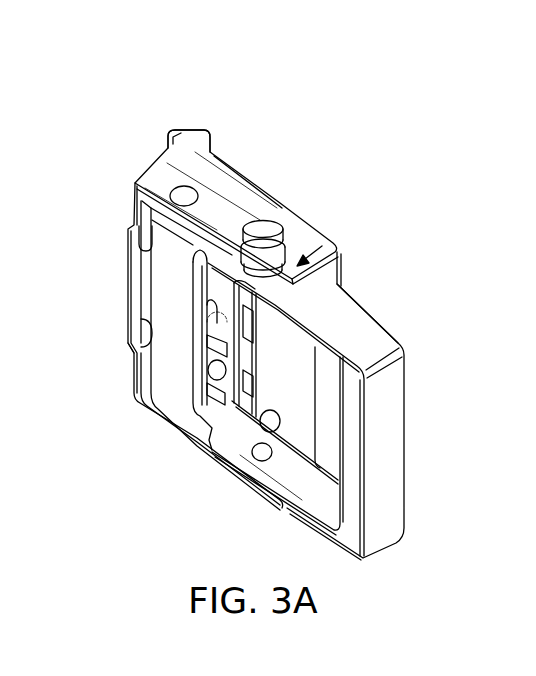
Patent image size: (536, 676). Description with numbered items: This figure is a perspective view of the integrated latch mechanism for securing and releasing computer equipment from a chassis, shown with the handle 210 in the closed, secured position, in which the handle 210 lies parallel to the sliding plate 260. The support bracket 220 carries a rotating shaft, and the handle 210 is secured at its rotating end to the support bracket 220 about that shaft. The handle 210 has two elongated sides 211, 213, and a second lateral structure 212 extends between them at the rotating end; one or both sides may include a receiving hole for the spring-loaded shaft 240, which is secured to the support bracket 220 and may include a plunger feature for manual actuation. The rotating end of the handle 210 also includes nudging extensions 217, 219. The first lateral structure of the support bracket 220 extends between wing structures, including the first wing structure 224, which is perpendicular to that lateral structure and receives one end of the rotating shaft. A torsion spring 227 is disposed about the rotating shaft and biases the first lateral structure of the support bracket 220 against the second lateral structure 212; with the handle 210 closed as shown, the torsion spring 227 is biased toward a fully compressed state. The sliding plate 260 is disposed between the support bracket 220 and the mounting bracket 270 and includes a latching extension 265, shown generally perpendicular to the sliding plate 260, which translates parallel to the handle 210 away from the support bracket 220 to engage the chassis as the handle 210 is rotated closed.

The handle 210 is at (400, 439).
The elongated side 211 is at (367, 348).
The second lateral structure 212 is at (168, 300).
The elongated side 213 is at (283, 468).
The nudging extension 217 is at (131, 249).
The nudging extension 219 is at (132, 339).
The support bracket 220 is at (340, 249).
The first wing structure 224 is at (342, 264).
The torsion spring 227 is at (134, 357).
The spring-loaded shaft 240 is at (270, 226).
The sliding plate 260 is at (198, 355).
The latching extension 265 is at (190, 130).
The mounting bracket 270 is at (296, 207).